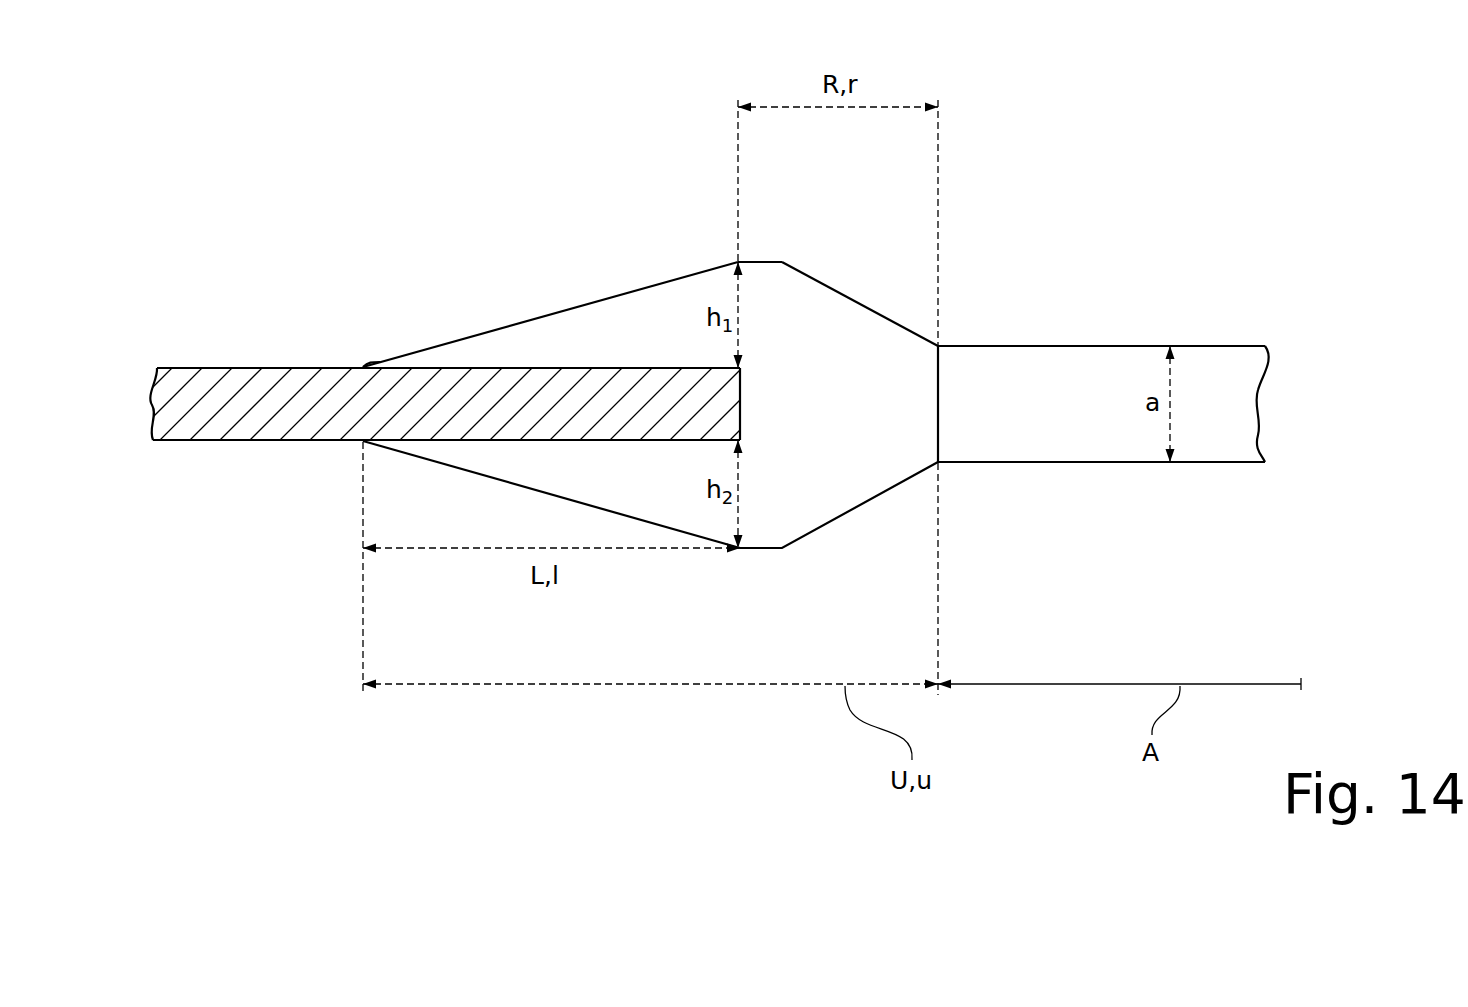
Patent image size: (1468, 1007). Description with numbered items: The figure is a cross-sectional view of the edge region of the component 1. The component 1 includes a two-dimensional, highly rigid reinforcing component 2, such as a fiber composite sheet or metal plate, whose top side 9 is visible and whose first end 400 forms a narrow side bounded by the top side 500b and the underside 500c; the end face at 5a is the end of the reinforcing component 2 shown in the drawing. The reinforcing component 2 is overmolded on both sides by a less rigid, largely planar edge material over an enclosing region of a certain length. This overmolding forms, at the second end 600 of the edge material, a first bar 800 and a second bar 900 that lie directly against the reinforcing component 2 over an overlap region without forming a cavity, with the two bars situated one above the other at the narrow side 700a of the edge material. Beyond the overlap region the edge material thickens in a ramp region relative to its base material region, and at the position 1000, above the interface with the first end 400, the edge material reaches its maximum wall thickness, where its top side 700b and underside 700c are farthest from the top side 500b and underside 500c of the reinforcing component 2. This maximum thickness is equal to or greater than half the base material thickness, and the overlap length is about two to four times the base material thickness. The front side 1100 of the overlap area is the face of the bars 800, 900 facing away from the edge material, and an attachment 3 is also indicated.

The component 1 is at (552, 153).
The reinforcing component 2 is at (265, 360).
The attachment 3 is at (1212, 326).
The end face of flat conductor 5a is at (740, 400).
The top side of the reinforcing component 9 is at (585, 367).
The first end of the flat reinforcing component 400 is at (715, 440).
The top side of the flat reinforcing component 500b is at (175, 367).
The underside of the flat reinforcing component 500c is at (215, 440).
The second end of flat edge material 600 is at (682, 272).
The narrow side of the flat edge material 700a is at (599, 364).
The top side of the flat edge material 700b is at (1058, 346).
The underside of the flat edge material 700c is at (1058, 462).
The first bar 800 is at (432, 345).
The second bar 900 is at (425, 460).
The position of the maximum wall thickness of the edge material 1000 is at (757, 262).
The front side of the overlap area 1100 is at (372, 366).